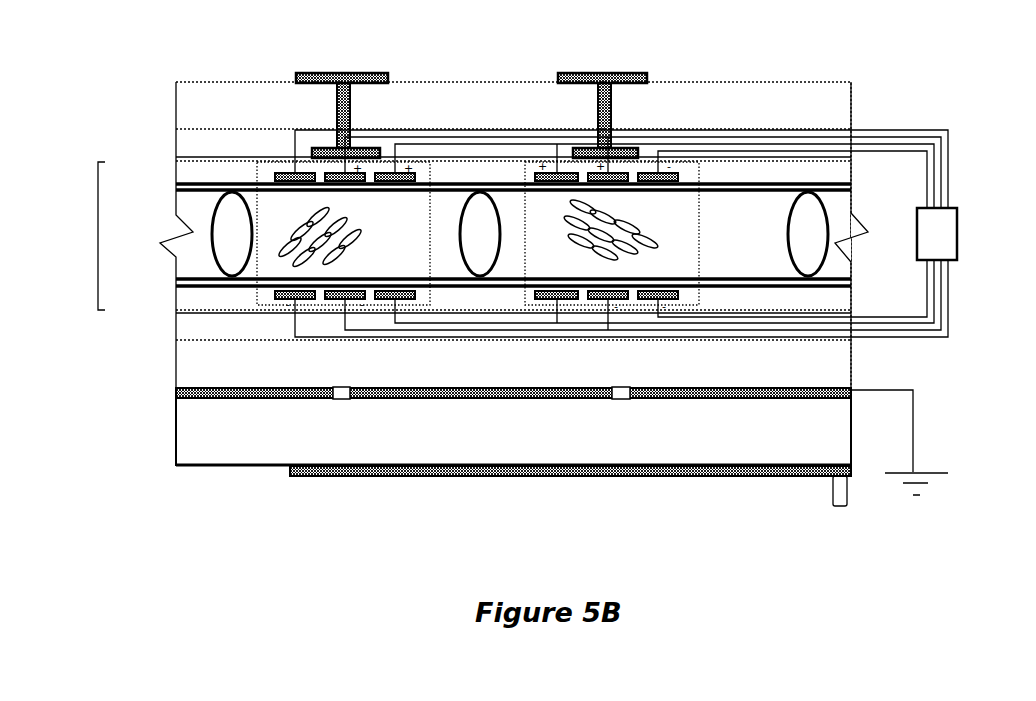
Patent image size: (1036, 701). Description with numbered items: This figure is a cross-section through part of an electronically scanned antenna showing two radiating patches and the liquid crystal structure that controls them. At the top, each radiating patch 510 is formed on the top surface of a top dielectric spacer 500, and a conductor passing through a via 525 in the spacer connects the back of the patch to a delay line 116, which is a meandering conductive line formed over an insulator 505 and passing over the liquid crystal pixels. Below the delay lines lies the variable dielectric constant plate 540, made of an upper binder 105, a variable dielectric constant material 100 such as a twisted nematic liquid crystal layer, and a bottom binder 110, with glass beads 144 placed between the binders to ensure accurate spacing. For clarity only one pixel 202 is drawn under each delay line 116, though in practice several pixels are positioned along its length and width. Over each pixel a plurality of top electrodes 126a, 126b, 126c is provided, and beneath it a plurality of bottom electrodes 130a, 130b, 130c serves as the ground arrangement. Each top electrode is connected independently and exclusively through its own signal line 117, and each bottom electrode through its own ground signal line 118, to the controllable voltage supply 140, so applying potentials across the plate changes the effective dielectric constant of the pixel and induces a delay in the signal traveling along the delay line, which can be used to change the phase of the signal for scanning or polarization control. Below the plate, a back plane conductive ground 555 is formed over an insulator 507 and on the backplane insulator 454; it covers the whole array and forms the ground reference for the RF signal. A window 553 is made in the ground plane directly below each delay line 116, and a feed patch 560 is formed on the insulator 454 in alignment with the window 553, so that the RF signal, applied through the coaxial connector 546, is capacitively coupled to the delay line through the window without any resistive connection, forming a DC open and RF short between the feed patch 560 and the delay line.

The top dielectric spacer 500 is at (770, 114).
The insulator 505 is at (780, 180).
The insulator 507 is at (770, 368).
The upper binder 105 is at (180, 184).
The bottom binder 110 is at (851, 279).
The variable dielectric constant material 100 is at (780, 238).
The glass beads 144 is at (818, 215).
The pixel 202 is at (400, 162).
The top electrode 126a is at (282, 173).
The top electrode 126b is at (336, 173).
The top electrode 126c is at (390, 173).
The bottom electrode 130a is at (280, 299).
The bottom electrode 130b is at (335, 299).
The bottom electrode 130c is at (385, 299).
The radiating patch 510 is at (305, 73).
The via 525 is at (598, 98).
The delay line 116 is at (365, 148).
The signal lines 117 is at (873, 121).
The ground signal lines 118 is at (905, 346).
The controllable voltage supply 140 is at (957, 215).
The variable dielectric constant plate 540 is at (98, 238).
The back plane conductive ground 555 is at (712, 398).
The window 553 is at (342, 399).
The backplane insulator 454 is at (335, 448).
The feed patch 560 is at (583, 476).
The connector 546 is at (840, 506).